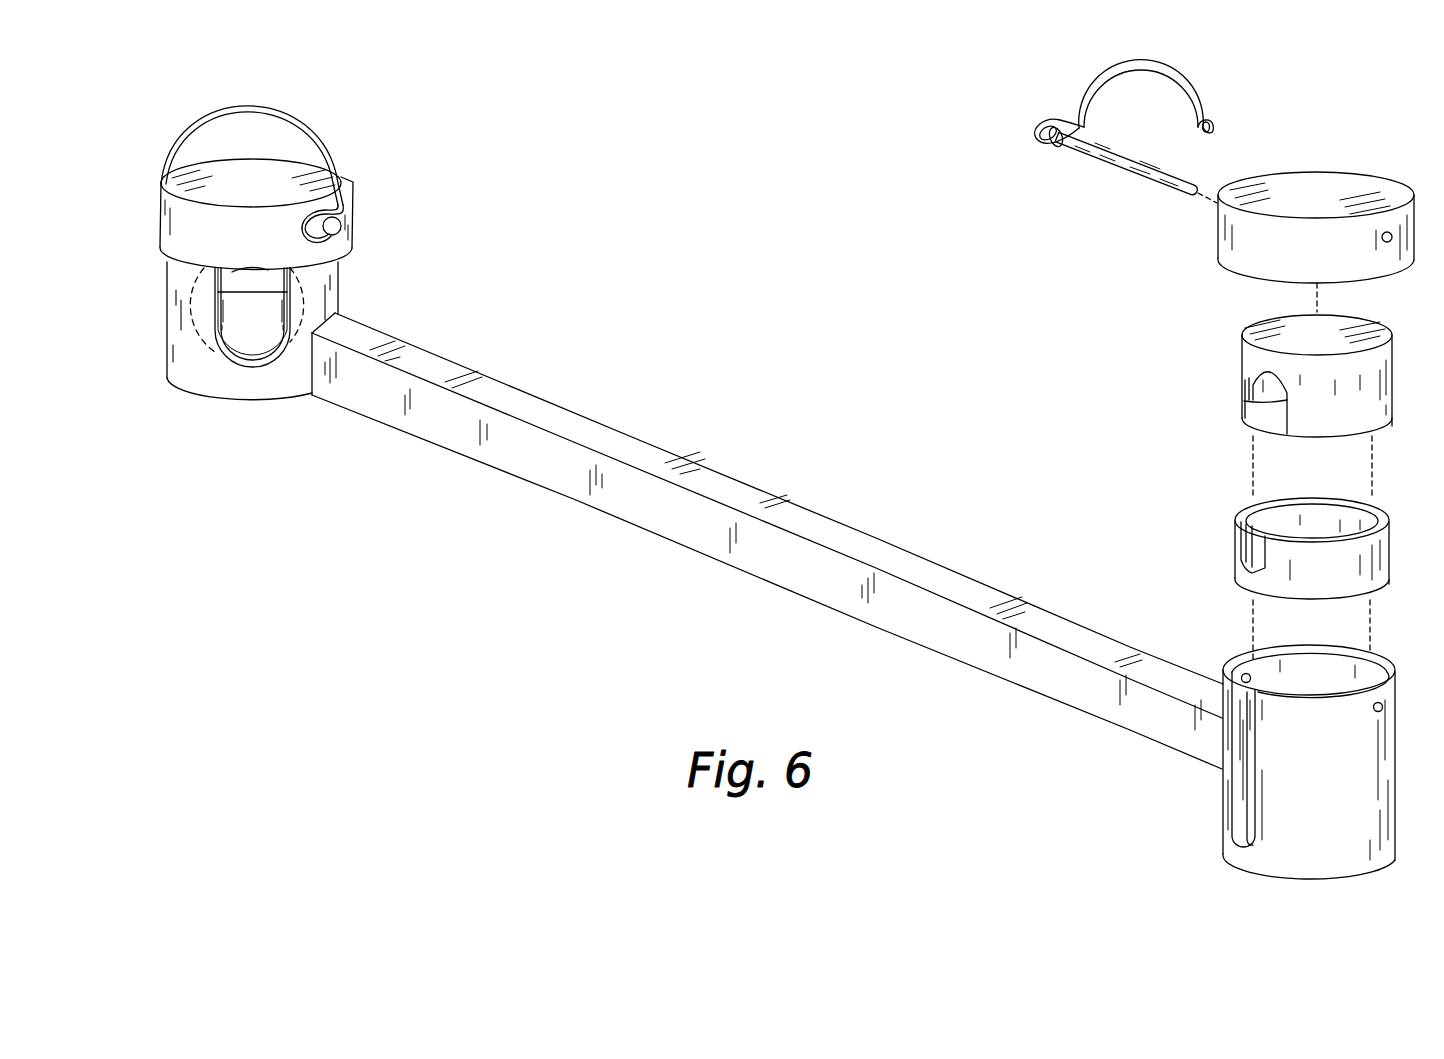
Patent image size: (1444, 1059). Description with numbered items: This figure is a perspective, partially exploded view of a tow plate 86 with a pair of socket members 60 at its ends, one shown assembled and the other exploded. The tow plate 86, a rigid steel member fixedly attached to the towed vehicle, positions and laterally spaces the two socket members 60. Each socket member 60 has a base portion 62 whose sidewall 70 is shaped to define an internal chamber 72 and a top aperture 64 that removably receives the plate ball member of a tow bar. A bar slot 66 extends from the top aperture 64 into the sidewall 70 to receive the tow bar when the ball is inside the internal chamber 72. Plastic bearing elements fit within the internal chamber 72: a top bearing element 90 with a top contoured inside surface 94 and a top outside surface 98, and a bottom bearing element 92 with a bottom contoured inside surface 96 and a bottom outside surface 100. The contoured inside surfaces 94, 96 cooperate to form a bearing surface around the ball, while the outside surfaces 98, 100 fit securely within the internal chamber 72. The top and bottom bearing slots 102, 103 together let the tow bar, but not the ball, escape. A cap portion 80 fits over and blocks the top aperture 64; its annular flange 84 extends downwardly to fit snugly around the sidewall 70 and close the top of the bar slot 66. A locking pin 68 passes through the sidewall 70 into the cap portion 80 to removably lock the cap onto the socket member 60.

The socket member 60 is at (330, 298).
The base portion 62 is at (213, 390).
The top aperture 64 is at (1384, 670).
The bar slot 66 is at (1224, 795).
The locking pin 68 is at (342, 224).
The sidewall 70 is at (175, 352).
The internal chamber 72 is at (1330, 668).
The cap portion 80 is at (238, 163).
The annular flange 84 is at (218, 262).
The tow plate 86 is at (678, 457).
The top bearing element 90 is at (1375, 418).
The bottom bearing element 92 is at (1373, 542).
The top contoured inside surface 94 is at (244, 281).
The bottom contoured inside surface 96 is at (247, 340).
The top outside surface 98 is at (1328, 428).
The bottom outside surface 100 is at (1322, 593).
The top bearing slot 102 is at (1243, 396).
The bottom bearing slot 103 is at (1237, 535).